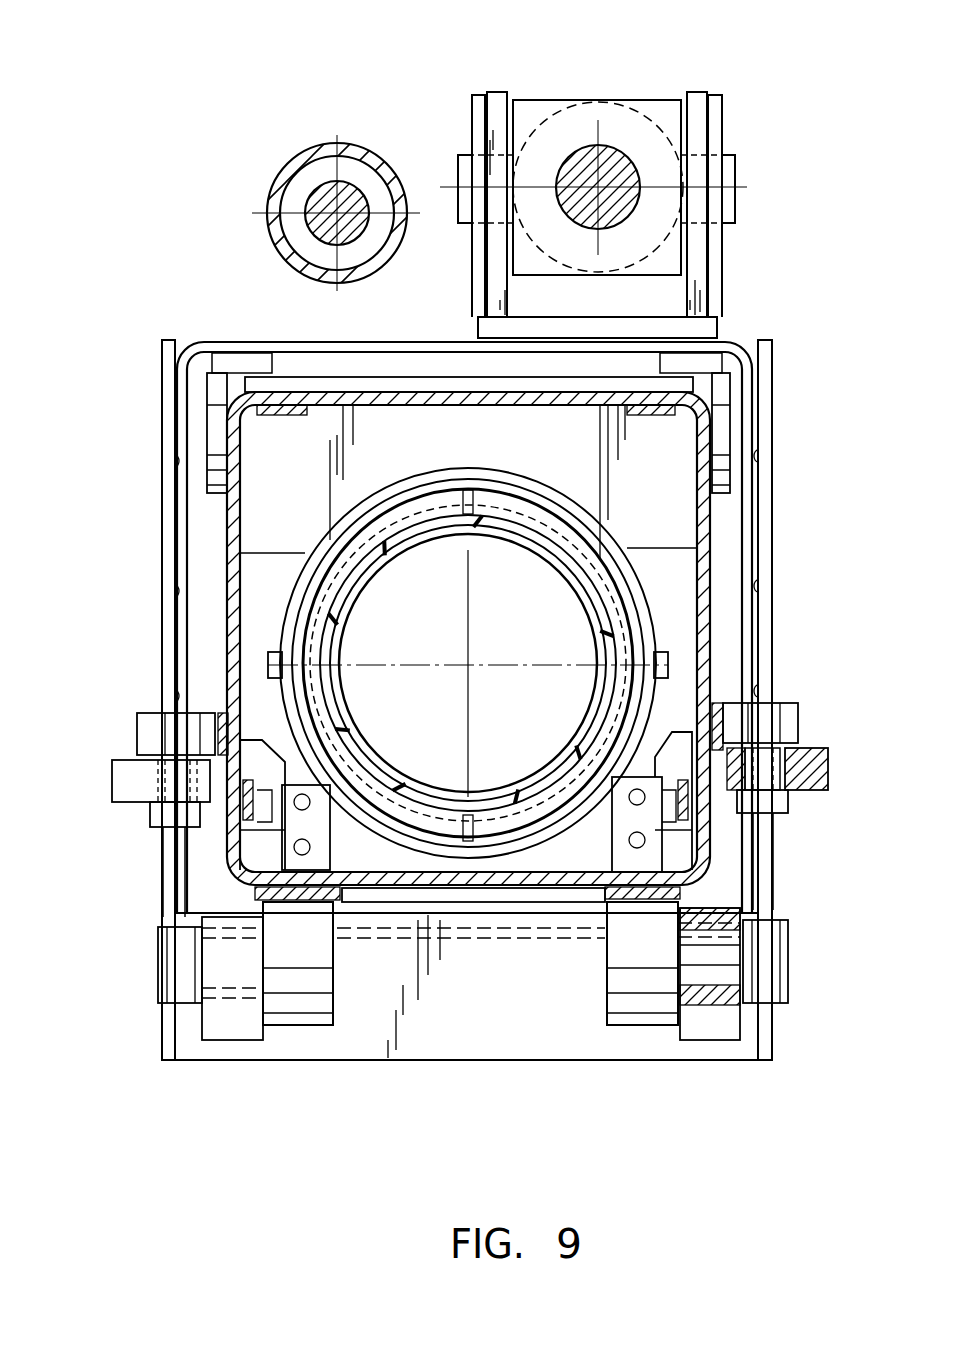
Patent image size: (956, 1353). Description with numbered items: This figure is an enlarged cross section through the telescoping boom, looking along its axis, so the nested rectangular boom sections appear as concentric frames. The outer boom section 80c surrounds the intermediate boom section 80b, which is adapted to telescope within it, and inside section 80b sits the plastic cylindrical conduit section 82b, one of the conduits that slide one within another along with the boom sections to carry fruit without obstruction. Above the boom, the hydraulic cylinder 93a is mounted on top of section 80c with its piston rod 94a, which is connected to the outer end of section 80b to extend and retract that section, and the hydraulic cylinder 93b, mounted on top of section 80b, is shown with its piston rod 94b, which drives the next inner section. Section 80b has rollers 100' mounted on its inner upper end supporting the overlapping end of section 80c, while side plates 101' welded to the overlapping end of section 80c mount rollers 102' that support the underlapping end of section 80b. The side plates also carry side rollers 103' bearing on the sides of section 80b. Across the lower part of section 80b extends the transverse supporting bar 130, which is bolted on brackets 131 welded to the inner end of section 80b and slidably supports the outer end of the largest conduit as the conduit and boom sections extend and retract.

The hydraulic cylinder 93a is at (555, 118).
The piston rod 94a is at (622, 157).
The hydraulic cylinder 93b is at (327, 143).
The piston rod 94b is at (310, 193).
The rollers 100' is at (466, 423).
The side plates 101' is at (466, 700).
The boom section 80b is at (230, 537).
The boom section 80c is at (180, 623).
The conduit section 82b is at (343, 586).
The side rollers 103' is at (457, 794).
The brackets 131 is at (622, 807).
The transverse supporting bar 130 is at (473, 865).
The rollers 102' is at (486, 1009).